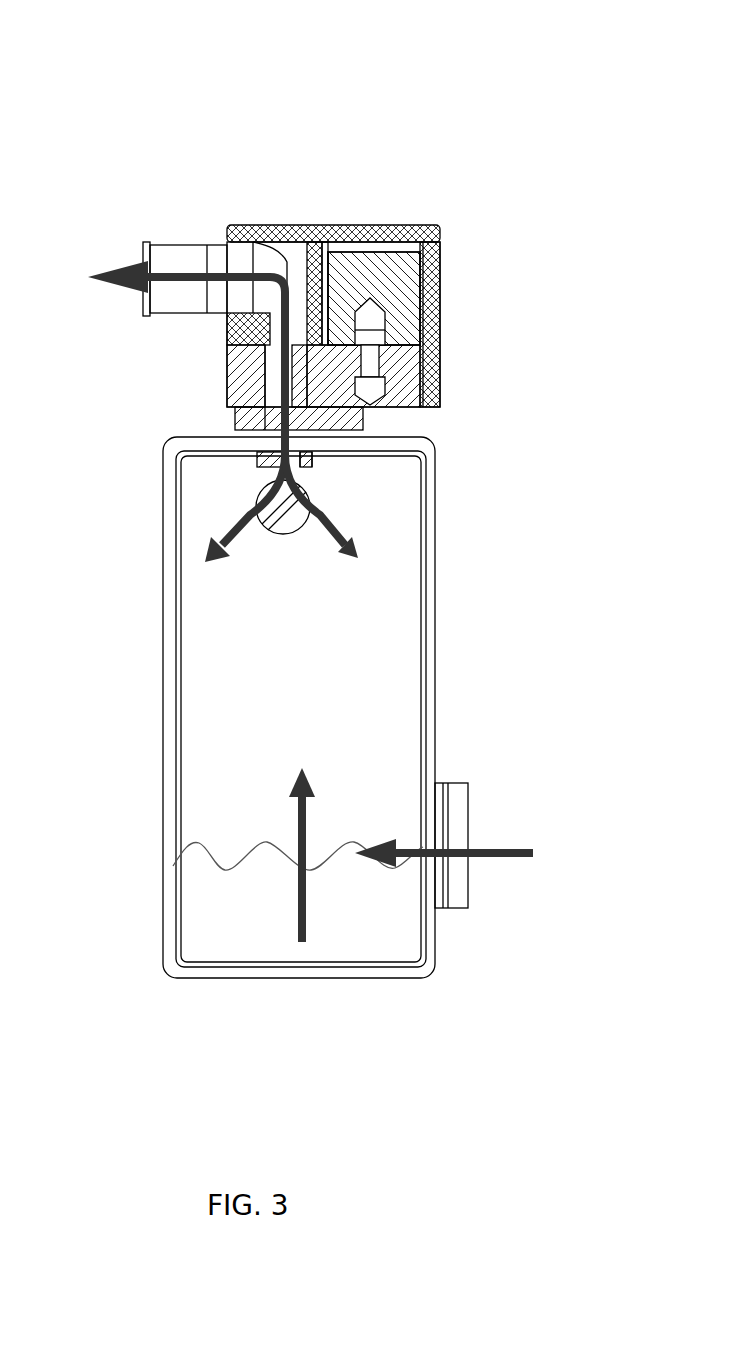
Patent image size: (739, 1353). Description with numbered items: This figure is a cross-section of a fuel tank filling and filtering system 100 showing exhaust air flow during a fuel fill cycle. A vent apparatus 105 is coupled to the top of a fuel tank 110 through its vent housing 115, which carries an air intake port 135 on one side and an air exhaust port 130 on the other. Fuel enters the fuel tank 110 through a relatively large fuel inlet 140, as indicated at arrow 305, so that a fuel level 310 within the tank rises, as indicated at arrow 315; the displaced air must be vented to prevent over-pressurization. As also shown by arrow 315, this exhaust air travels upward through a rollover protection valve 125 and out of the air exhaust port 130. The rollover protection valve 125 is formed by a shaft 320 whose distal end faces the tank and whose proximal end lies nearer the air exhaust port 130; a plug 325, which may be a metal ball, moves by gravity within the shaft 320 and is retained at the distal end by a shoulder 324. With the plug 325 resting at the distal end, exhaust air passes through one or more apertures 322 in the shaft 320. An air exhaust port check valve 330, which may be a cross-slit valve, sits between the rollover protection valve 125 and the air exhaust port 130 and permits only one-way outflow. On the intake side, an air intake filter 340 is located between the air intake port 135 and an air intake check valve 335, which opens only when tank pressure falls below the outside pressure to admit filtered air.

The fuel tank filling and filtering system 100 is at (592, 46).
The vent apparatus 105 is at (246, 218).
The fuel tank 110 is at (437, 522).
The vent housing 115 is at (404, 223).
The rollover protection valve 125 is at (252, 469).
The air exhaust port 130 is at (196, 244).
The air intake port 135 is at (441, 282).
The fuel inlet 140 is at (450, 911).
The arrow 305 is at (478, 846).
The fuel level 310 is at (228, 873).
The arrow 315 is at (302, 902).
The shaft 320 is at (315, 459).
The apertures 322 is at (306, 476).
The shoulder 324 is at (306, 534).
The plug 325 is at (345, 441).
The air exhaust port check valve 330 is at (245, 344).
The air intake check valve 335 is at (382, 344).
The air intake filter 340 is at (404, 262).